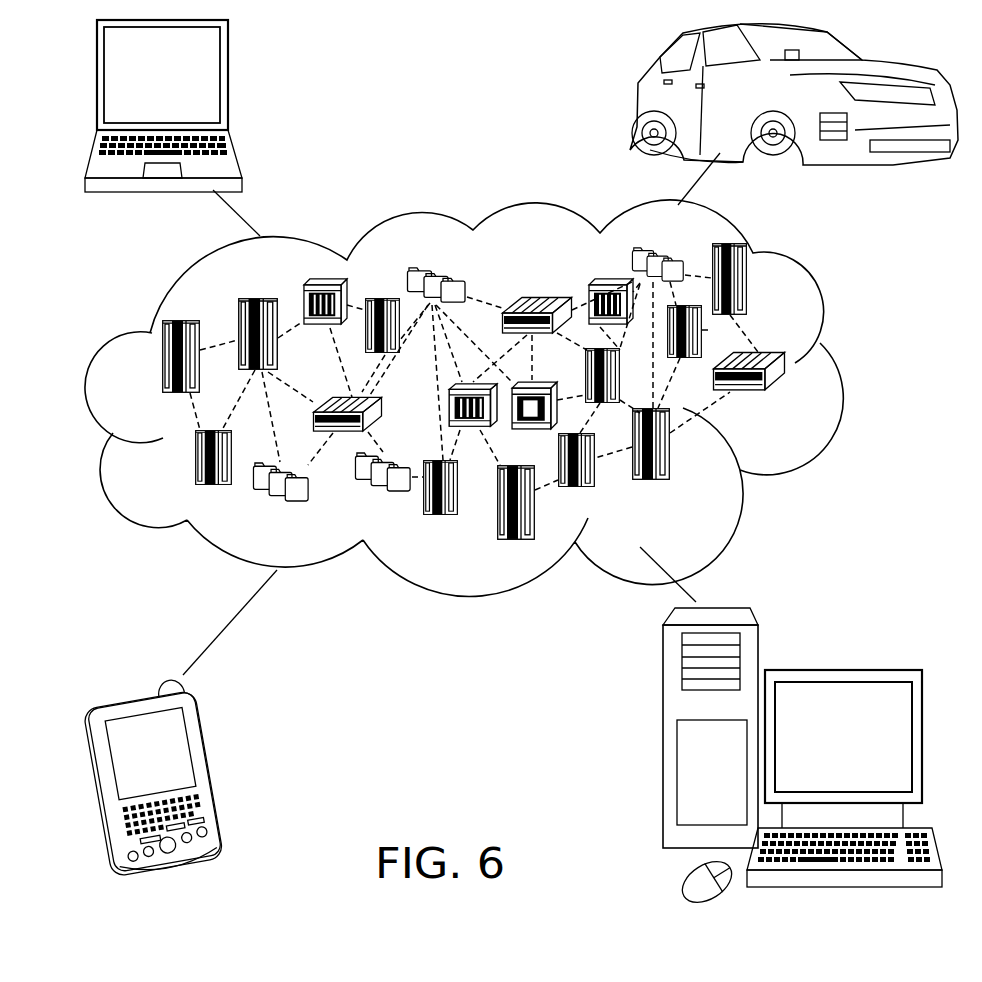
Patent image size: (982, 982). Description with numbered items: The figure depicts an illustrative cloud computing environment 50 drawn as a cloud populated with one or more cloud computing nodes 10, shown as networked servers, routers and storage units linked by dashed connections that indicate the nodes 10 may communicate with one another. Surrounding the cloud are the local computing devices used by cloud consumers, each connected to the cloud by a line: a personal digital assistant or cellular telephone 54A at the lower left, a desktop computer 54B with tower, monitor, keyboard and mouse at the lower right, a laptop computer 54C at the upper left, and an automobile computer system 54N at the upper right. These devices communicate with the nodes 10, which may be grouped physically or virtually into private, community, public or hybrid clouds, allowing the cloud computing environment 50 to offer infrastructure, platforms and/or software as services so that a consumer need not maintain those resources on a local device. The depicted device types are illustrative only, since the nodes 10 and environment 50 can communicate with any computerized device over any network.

The cloud computing node 10 is at (796, 410).
The cloud computing environment 50 is at (840, 372).
The personal digital assistant (PDA) or cellular telephone 54A is at (216, 771).
The desktop computer 54B is at (840, 668).
The laptop computer 54C is at (229, 84).
The automobile computer system 54N is at (637, 104).